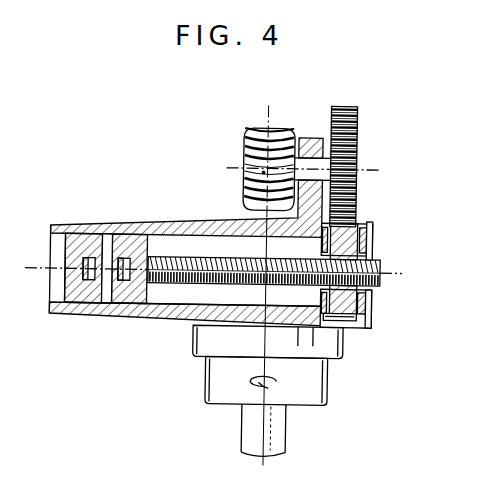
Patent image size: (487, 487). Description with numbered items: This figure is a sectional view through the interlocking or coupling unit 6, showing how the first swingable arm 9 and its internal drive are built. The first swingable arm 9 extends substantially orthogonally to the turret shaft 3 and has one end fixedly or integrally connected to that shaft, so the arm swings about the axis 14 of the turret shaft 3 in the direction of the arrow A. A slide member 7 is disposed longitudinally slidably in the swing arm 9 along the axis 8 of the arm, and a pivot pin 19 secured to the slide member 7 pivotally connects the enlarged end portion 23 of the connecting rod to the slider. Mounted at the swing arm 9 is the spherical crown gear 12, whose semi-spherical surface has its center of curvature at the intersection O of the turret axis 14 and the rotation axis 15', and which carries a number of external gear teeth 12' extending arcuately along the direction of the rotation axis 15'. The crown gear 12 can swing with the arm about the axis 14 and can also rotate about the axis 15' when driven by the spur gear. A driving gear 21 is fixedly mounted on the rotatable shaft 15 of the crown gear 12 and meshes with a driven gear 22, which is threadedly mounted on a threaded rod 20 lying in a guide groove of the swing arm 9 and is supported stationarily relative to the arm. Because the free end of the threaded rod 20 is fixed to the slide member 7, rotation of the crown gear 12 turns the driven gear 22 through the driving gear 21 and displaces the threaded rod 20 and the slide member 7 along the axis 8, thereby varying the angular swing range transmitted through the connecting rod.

The turret shaft 3 is at (289, 436).
The interlocking or coupling unit 6 is at (56, 484).
The slide member 7 is at (80, 240).
The axis of the first swingable arm 8 is at (38, 265).
The first swingable arm 9 is at (190, 220).
The crown gear 12 is at (238, 169).
The external gear teeth 12' is at (256, 110).
The axis of the turret shaft 14 is at (266, 117).
The rotatable shaft of the crown gear 15 is at (346, 151).
The rotation axis 15' is at (309, 184).
The pivot pin 19 is at (107, 237).
The threaded rod 20 is at (171, 286).
The driving gear 21 is at (352, 113).
The driven gear 22 is at (373, 292).
The enlarged end portion 23 is at (97, 282).
The intersection O is at (261, 172).
The arrow A is at (272, 382).